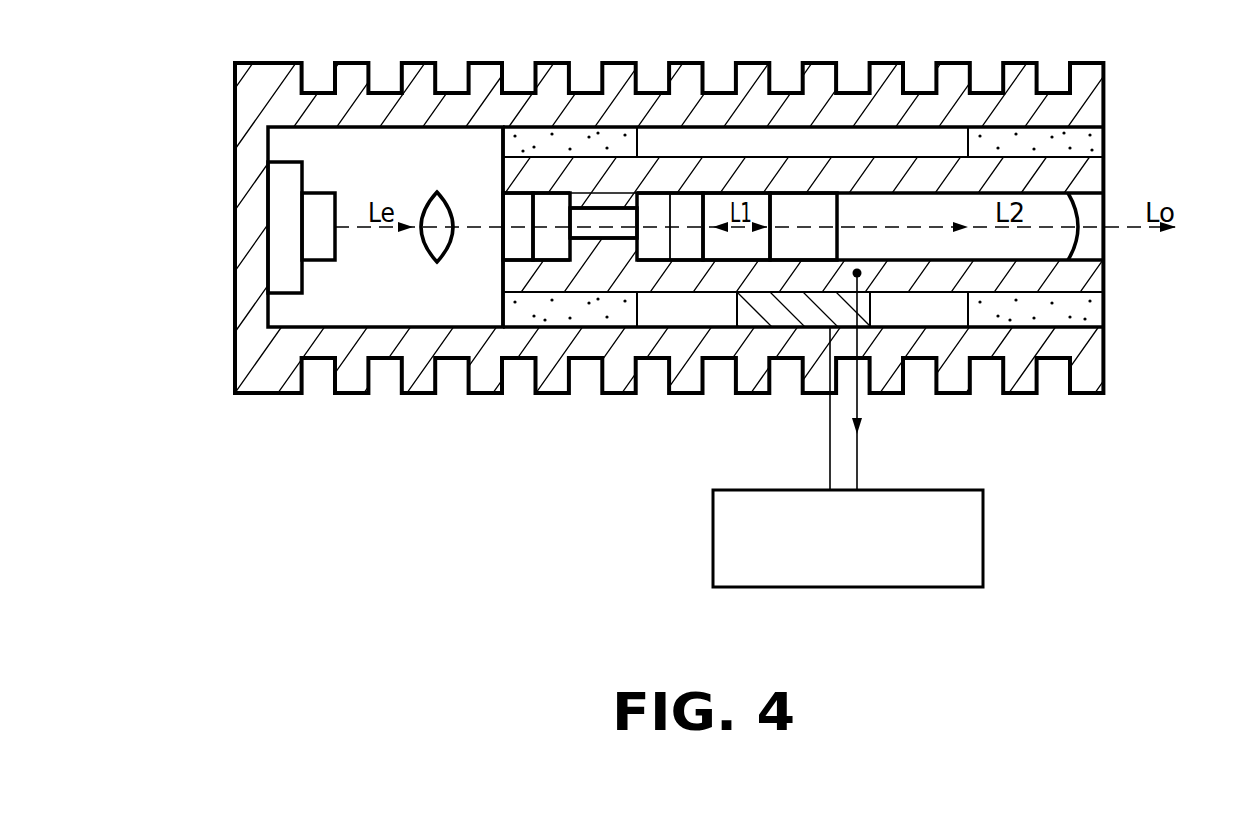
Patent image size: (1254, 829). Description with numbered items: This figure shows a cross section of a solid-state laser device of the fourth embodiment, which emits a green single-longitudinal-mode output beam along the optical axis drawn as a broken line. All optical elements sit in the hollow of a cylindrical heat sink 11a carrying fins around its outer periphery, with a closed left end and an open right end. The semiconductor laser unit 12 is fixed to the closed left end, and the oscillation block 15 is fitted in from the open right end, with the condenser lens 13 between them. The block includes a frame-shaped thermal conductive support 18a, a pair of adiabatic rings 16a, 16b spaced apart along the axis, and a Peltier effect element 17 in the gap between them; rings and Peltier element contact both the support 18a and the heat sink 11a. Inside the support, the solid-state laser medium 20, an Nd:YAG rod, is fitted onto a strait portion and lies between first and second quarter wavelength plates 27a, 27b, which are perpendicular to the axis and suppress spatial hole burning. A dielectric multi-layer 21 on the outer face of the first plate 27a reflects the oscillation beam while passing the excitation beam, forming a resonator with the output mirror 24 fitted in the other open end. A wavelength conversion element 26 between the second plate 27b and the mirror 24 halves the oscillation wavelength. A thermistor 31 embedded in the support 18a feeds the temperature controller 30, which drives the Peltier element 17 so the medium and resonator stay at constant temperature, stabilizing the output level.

The cylindrical heat sink 11a is at (488, 383).
The semiconductor laser unit 12 is at (283, 253).
The condenser lens 13 is at (437, 192).
The oscillation block 15 is at (940, 150).
The adiabatic ring 16a is at (585, 310).
The adiabatic ring 16b is at (1085, 310).
The Peltier effect element 17 is at (792, 318).
The thermal conductive support 18a is at (1085, 175).
The solid-state laser medium 20 is at (607, 215).
The dielectric multi-layer 21 is at (503, 208).
The output mirror 24 is at (1085, 243).
The wavelength conversion element 26 is at (805, 203).
The first quarter wavelength plate 27a is at (520, 202).
The second quarter wavelength plate 27b is at (680, 202).
The temperature controller 30 is at (985, 522).
The thermistor 31 is at (858, 263).